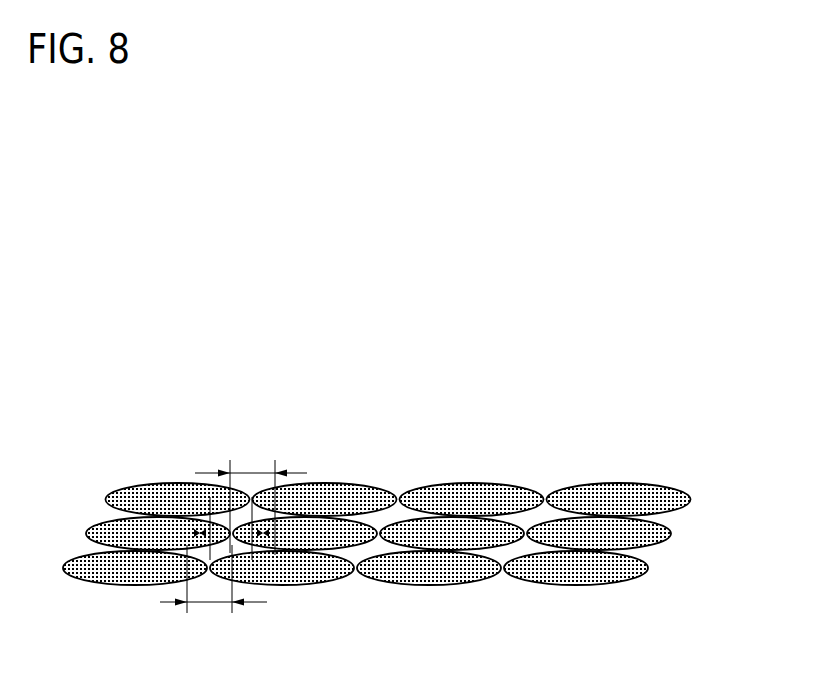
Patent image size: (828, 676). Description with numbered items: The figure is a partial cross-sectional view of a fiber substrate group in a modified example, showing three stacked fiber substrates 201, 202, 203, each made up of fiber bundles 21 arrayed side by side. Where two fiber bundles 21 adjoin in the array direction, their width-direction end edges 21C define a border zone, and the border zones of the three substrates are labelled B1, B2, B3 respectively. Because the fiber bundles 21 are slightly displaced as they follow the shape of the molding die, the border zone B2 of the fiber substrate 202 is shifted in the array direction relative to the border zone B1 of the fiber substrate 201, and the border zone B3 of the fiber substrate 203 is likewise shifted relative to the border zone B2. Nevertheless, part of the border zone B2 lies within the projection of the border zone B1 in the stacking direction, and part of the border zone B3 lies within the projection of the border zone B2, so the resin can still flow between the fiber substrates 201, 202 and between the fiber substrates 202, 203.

The fiber bundle 21 is at (403, 529).
The end edge 21C is at (355, 502).
The fiber substrate 201 is at (700, 486).
The fiber substrate 202 is at (684, 533).
The fiber substrate 203 is at (664, 565).
The border zone B1 is at (251, 501).
The border zone B2 is at (237, 540).
The border zone B3 is at (213, 589).